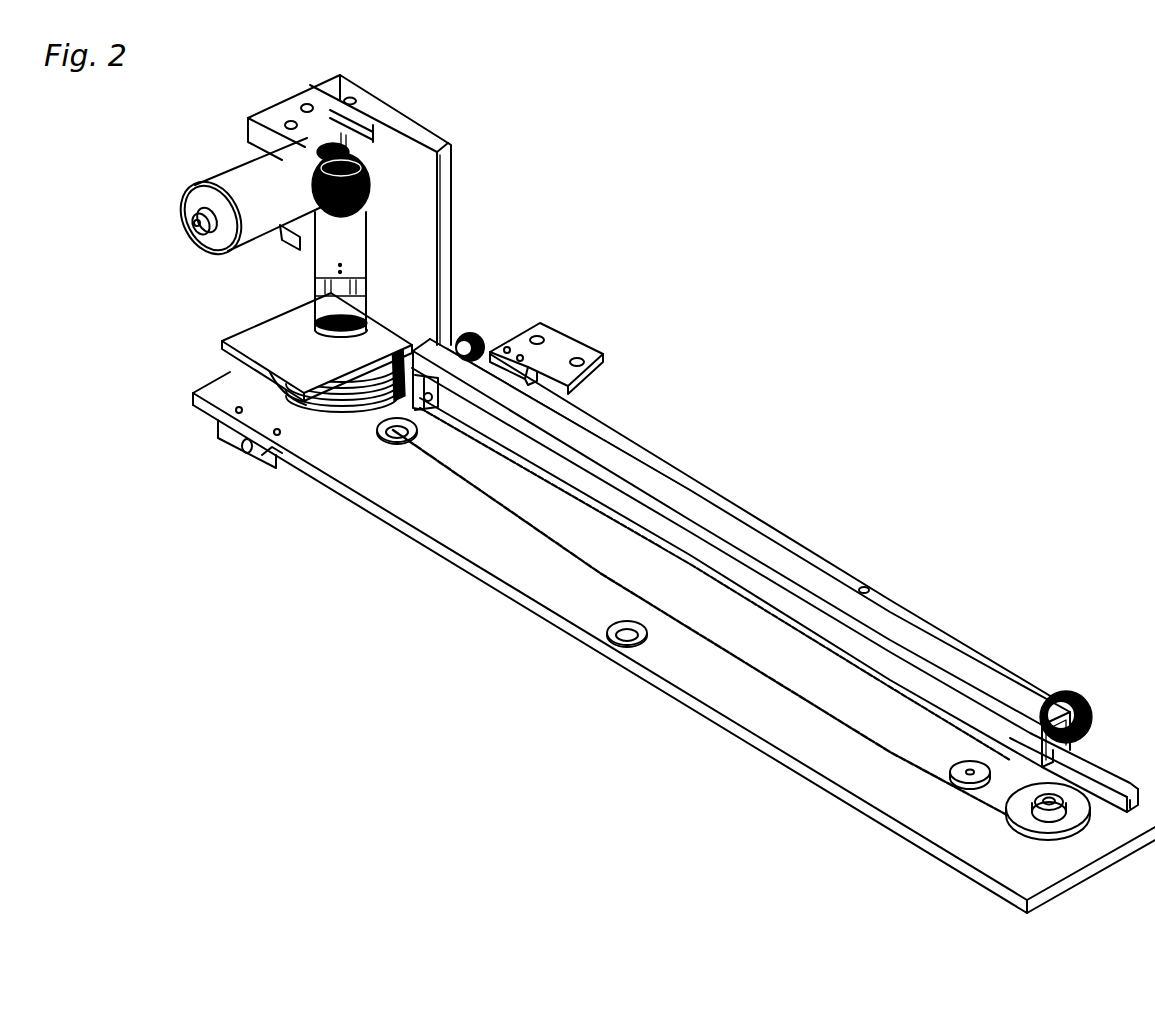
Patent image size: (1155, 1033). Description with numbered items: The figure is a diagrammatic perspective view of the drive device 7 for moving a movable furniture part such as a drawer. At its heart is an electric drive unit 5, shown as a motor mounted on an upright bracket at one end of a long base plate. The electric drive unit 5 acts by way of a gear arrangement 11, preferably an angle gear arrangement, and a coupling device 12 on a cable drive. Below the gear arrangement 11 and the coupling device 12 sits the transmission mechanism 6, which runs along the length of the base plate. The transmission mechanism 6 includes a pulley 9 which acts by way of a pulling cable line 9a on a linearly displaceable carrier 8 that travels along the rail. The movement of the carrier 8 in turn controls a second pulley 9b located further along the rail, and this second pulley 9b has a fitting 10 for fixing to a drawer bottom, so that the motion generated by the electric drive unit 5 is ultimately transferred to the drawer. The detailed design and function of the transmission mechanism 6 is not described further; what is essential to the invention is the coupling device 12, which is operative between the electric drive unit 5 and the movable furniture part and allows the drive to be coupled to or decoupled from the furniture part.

The electric drive unit 5 is at (187, 207).
The transmission mechanism 6 is at (703, 460).
The drive device 7 is at (557, 305).
The carrier 8 is at (803, 568).
The pulley 9 is at (363, 405).
The pulling cable line 9a is at (600, 580).
The second pulley 9b is at (997, 660).
The fitting 10 is at (585, 355).
The gear arrangement 11 is at (372, 169).
The coupling device 12 is at (325, 306).